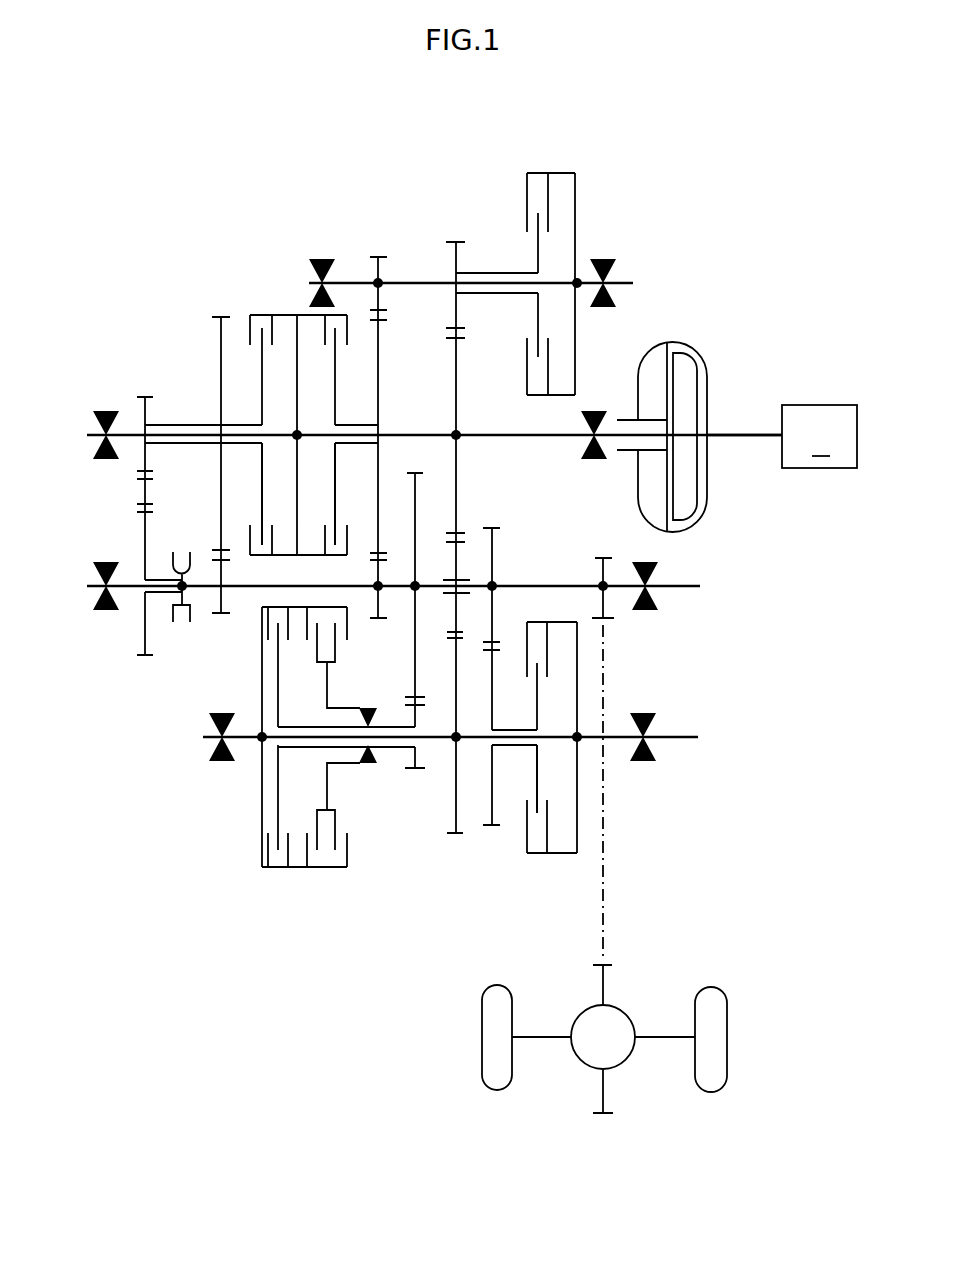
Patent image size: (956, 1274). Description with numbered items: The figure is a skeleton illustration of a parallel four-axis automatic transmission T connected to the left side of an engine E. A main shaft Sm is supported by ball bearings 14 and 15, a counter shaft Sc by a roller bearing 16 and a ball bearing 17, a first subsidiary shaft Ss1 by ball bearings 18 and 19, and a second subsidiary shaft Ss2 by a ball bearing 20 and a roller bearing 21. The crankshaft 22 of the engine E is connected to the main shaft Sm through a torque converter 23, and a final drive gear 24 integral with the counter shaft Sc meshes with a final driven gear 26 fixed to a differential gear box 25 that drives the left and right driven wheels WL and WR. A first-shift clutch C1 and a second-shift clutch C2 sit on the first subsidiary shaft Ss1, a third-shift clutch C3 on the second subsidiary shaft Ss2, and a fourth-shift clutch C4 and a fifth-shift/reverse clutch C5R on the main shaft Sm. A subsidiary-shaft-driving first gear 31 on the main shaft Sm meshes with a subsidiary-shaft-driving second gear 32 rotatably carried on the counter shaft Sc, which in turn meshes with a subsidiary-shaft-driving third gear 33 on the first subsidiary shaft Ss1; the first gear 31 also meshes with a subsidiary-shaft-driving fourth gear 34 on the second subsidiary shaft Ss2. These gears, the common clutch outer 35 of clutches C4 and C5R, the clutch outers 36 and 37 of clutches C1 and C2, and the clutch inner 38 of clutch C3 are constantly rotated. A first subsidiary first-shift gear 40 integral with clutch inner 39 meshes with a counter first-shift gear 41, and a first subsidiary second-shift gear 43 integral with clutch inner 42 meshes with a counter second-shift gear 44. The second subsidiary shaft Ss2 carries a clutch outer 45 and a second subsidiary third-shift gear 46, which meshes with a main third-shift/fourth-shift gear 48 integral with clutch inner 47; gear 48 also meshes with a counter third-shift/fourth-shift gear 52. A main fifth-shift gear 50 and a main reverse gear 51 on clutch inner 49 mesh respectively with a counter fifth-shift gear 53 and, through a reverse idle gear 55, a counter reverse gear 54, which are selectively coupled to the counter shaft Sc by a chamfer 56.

The ball bearing 14 is at (594, 409).
The ball bearing 15 is at (107, 409).
The roller bearing 16 is at (651, 563).
The ball bearing 17 is at (106, 560).
The ball bearing 18 is at (645, 712).
The ball bearing 19 is at (223, 711).
The ball bearing 20 is at (609, 258).
The roller bearing 21 is at (324, 256).
The crankshaft 22 is at (757, 434).
The torque converter 23 is at (704, 347).
The final drive gear 24 is at (604, 556).
The differential gear box 25 is at (613, 1022).
The final driven gear 26 is at (610, 957).
The subsidiary-shaft-driving first gear 31 is at (466, 339).
The subsidiary-shaft-driving second gear 32 is at (446, 543).
The subsidiary-shaft-driving third gear 33 is at (454, 835).
The subsidiary-shaft-driving fourth gear 34 is at (455, 240).
The clutch outer 35 is at (297, 557).
The clutch outer 36 is at (332, 870).
The clutch outer 37 is at (534, 858).
The clutch inner 38 is at (536, 330).
The clutch inner 39 is at (281, 805).
The first subsidiary first-shift gear 40 is at (415, 770).
The counter first-shift gear 41 is at (420, 452).
The clutch inner 42 is at (534, 755).
The first subsidiary second-shift gear 43 is at (503, 815).
The counter second-shift gear 44 is at (492, 526).
The clutch outer 45 is at (538, 172).
The second subsidiary third-shift gear 46 is at (378, 255).
The clutch inner 47 is at (337, 500).
The main third-shift/fourth-shift gear 48 is at (381, 319).
The clutch inner 49 is at (259, 504).
The main fifth-shift gear 50 is at (214, 302).
The main reverse gear 51 is at (150, 391).
The counter third-shift/fourth-shift gear 52 is at (373, 621).
The counter fifth-shift gear 53 is at (221, 616).
The counter reverse gear 54 is at (147, 657).
The reverse idle gear 55 is at (150, 478).
The chamfer 56 is at (176, 614).
The parallel 4-axis automatic transmission T is at (306, 229).
The engine E is at (819, 436).
The main shaft Sm is at (466, 437).
The counter shaft Sc is at (538, 585).
The first subsidiary shaft Ss1 is at (663, 740).
The second subsidiary shaft Ss2 is at (417, 283).
The first-shift clutch C1 is at (292, 878).
The second-shift clutch C2 is at (555, 862).
The third-shift clutch C3 is at (587, 212).
The fourth-shift clutch C4 is at (306, 305).
The fifth-shift/reverse clutch C5R is at (256, 305).
The left driven wheel WL is at (497, 1000).
The right driven wheel WR is at (707, 998).